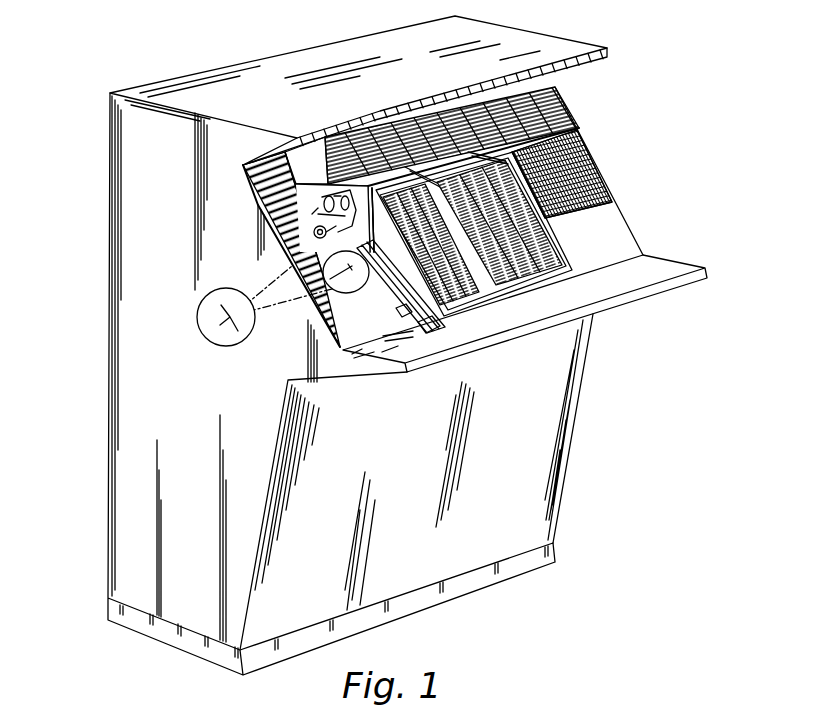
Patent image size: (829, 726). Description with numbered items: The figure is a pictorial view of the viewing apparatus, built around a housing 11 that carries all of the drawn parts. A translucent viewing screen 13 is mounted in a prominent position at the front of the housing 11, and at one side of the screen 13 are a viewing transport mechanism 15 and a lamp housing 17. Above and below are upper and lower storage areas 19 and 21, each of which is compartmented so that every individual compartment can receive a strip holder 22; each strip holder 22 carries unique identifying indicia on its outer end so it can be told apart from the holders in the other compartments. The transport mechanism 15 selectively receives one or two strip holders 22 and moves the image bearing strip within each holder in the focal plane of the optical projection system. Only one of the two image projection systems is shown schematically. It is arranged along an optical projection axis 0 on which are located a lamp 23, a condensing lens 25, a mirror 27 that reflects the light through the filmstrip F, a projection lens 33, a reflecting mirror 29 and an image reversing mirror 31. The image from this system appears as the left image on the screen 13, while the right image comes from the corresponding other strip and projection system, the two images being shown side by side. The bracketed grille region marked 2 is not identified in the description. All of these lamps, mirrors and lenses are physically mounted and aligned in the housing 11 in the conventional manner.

The housing 11 is at (125, 408).
The translucent viewing screen 13 is at (563, 250).
The viewing transport mechanism 15 is at (400, 341).
The lamp housing 17 is at (348, 236).
The upper storage area 19 is at (557, 82).
The lower storage area 21 is at (568, 111).
The strip holder 22 is at (385, 306).
The lamp 23 is at (292, 190).
The condensing lens 25 is at (325, 197).
The mirror 27 is at (339, 205).
The reflecting mirror 29 is at (238, 331).
The image reversing mirror 31 is at (333, 276).
The projection lens 33 is at (313, 230).
The grille section 2 is at (605, 172).
The optical projection axis 0 is at (255, 290).
The filmstrip F is at (312, 214).